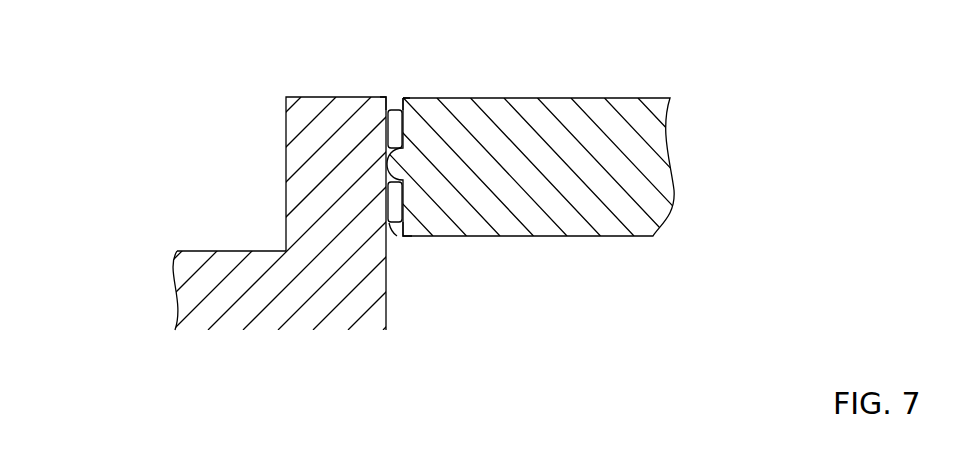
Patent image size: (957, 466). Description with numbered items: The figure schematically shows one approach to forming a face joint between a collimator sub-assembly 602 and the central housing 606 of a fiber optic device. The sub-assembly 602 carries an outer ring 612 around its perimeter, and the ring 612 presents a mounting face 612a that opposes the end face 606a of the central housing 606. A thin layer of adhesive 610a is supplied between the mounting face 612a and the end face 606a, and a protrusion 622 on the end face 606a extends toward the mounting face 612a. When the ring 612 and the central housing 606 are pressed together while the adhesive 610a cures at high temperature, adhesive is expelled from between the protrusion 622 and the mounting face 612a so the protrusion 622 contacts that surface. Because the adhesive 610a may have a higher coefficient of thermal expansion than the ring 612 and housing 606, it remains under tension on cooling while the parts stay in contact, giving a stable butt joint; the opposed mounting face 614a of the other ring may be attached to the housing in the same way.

The collimator sub-assembly 602 is at (200, 250).
The outer ring 612 is at (283, 131).
The mounting face 612a is at (388, 97).
The central housing 606 is at (585, 97).
The end face 606a is at (396, 234).
The mounting face 614a is at (403, 100).
The adhesive 610a is at (393, 106).
The protrusion 622 is at (392, 238).